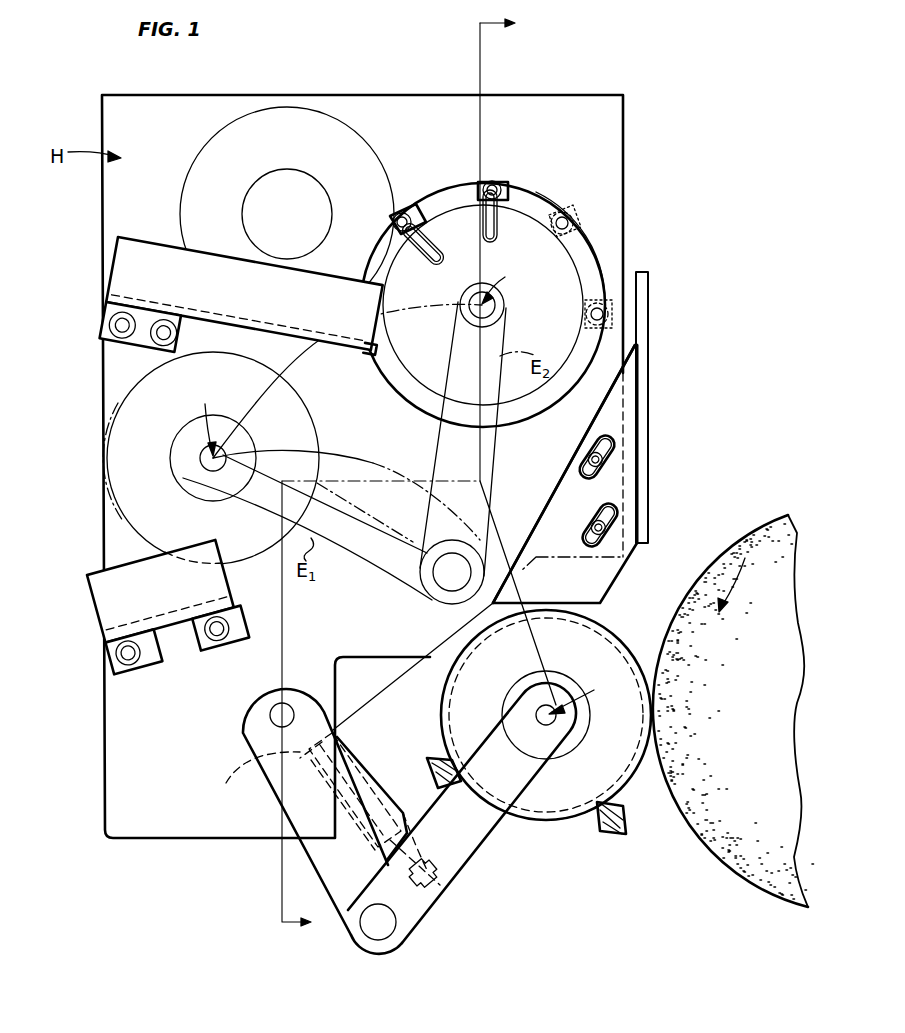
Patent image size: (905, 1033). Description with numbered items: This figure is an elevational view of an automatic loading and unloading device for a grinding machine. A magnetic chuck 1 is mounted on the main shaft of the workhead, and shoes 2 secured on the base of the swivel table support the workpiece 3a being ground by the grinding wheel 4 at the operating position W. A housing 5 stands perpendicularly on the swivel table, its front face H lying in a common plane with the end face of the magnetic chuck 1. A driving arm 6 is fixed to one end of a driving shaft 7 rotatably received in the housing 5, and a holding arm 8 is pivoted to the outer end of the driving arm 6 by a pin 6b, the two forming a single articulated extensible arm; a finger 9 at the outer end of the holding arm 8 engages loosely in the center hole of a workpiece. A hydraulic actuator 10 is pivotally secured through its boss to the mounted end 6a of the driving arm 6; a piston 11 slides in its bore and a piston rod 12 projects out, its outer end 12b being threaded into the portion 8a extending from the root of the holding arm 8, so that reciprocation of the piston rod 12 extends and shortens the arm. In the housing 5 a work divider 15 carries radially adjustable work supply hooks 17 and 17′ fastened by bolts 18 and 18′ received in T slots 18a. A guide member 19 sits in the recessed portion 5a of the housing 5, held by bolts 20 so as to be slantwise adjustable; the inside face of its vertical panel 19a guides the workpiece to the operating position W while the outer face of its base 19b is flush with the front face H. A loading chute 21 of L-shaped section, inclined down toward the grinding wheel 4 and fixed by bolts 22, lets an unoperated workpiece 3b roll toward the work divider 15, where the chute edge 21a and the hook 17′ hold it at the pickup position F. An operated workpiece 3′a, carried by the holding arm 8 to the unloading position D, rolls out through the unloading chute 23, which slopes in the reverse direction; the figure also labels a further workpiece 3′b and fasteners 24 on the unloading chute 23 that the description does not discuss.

The magnetic chuck 1 is at (572, 792).
The shoes 2 is at (633, 815).
The workpiece 3a is at (615, 636).
The operated workpiece 3′a is at (112, 500).
The unoperated workpiece 3b is at (340, 142).
The pulley 3′b is at (578, 246).
The grinding wheel 4 is at (718, 557).
The housing 5 is at (99, 207).
The recessed portion 5a is at (553, 494).
The driving arm 6 is at (295, 790).
The mounted end of the driving arm 6a is at (262, 766).
The pin 6b is at (377, 942).
The driving shaft 7 is at (278, 716).
The holding arm 8 is at (491, 822).
The portion rotatably extended from the root of the holding arm 8a is at (440, 870).
The finger 9 is at (576, 733).
The hydraulic actuator 10 is at (390, 802).
The piston 11 is at (337, 738).
The piston rod 12 is at (381, 791).
The outer end of the piston rod 12b is at (435, 884).
The work divider 15 is at (551, 210).
The work supply hook 17 is at (414, 204).
The work supply hook 17′ is at (510, 186).
The bolt 18 is at (402, 213).
The bolt 18′ is at (493, 182).
The T slots 18a is at (432, 252).
The guide member 19 is at (608, 570).
The vertical panel 19a is at (648, 400).
The base of the guide member 19b is at (617, 393).
The bolts 20 is at (593, 455).
The loading chute 21 is at (142, 265).
The edge of the loading chute 21a is at (380, 352).
The bolts 22 is at (115, 332).
The unloading chute 23 is at (100, 600).
The bolt 24 is at (128, 662).